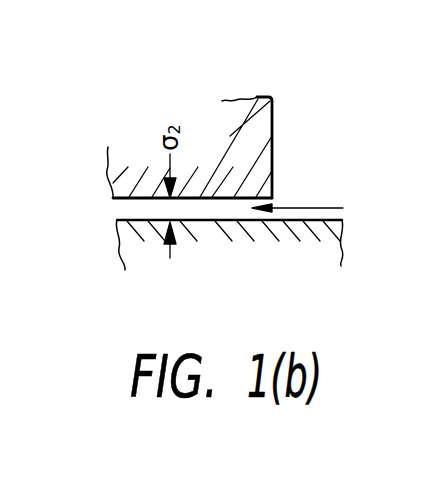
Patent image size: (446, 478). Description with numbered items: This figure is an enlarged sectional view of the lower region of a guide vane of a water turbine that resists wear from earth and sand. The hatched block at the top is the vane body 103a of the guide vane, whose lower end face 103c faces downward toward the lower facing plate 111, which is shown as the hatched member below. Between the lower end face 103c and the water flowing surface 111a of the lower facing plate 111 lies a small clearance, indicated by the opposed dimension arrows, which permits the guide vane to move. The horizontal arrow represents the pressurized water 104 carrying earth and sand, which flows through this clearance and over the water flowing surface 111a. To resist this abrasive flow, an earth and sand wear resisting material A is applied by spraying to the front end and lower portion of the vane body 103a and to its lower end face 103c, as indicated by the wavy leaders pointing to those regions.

The vane body 103a is at (227, 198).
The lower end face of the vane body 103c is at (206, 215).
The pressurized water 104 is at (301, 207).
The lower facing plate 111 is at (195, 231).
The water flowing surface of the lower facing plate 111a is at (123, 209).
The earth and sand wear resisting material A is at (138, 197).